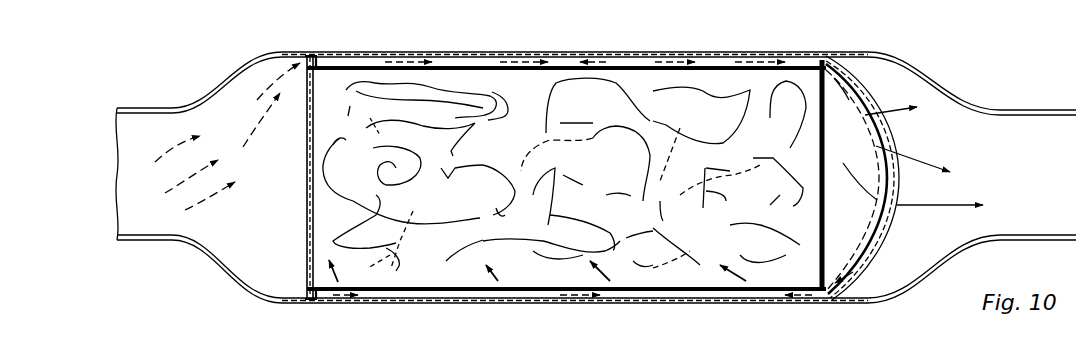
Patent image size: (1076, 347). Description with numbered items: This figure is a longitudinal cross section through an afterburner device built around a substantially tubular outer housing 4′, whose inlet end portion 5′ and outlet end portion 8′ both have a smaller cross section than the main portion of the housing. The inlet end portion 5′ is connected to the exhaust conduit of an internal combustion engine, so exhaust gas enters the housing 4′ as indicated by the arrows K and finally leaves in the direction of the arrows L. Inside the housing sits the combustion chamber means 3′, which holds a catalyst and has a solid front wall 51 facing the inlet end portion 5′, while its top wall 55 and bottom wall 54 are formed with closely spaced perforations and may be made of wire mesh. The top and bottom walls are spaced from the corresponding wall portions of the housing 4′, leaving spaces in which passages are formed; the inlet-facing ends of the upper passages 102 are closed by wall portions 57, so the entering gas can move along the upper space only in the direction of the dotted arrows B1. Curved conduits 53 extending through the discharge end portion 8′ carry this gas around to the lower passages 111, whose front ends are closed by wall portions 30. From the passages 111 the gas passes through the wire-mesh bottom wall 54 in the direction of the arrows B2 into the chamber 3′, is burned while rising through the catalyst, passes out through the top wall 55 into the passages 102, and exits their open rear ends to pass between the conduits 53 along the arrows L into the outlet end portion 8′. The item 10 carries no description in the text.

The inlet end portion 5′ is at (150, 122).
The outlet end portion 8′ is at (1027, 127).
The outer housing 4′ is at (413, 57).
The combustion chamber means 3′ is at (484, 90).
The inner shell wall 10 is at (708, 60).
The passages 102 is at (613, 60).
The passages 111 is at (683, 300).
The front wall 51 is at (317, 90).
The wall portions 57 is at (311, 56).
The wall portions 30 is at (304, 303).
The top wall 55 is at (573, 62).
The bottom wall 54 is at (721, 292).
The curved conduits 53 is at (882, 100).
The arrows L is at (963, 203).
The arrows K is at (185, 210).
The dotted arrows B1 is at (386, 58).
The arrows B2 is at (350, 303).